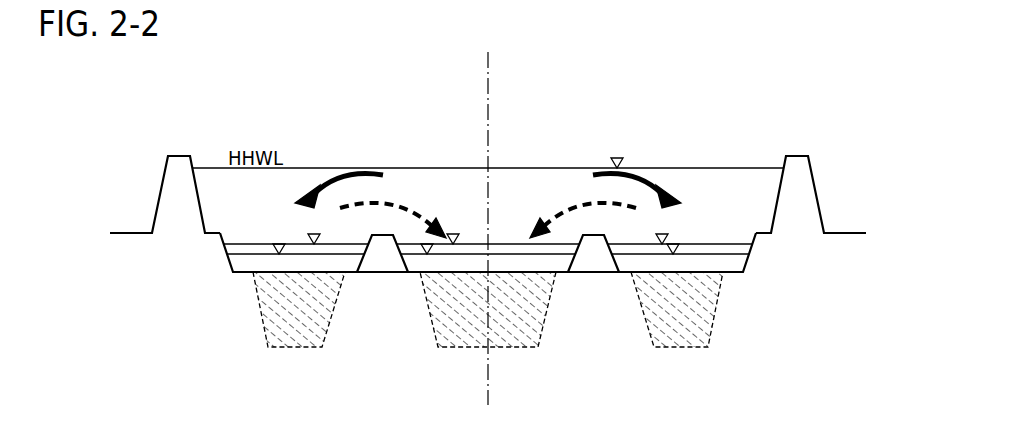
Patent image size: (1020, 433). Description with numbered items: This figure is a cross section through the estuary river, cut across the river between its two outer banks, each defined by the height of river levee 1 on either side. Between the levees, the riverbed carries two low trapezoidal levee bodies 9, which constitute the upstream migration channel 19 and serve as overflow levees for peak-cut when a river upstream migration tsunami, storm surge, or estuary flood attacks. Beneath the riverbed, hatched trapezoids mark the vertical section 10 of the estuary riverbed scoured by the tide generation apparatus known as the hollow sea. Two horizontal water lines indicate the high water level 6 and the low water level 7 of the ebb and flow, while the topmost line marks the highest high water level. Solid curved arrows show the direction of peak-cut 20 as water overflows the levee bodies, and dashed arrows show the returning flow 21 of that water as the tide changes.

The height of river levee 1 is at (177, 178).
The high water level of ebb and flow 6 is at (693, 243).
The low water level of ebb and flow 7 is at (720, 257).
The levee body constituting upstream migration channel 9 is at (382, 252).
The vertical section of estuary riverbed scoured by tide generation apparatus 10 is at (298, 332).
The upstream migration channel 19 is at (258, 263).
The direction of peak-cut 20 is at (357, 177).
The returning flow 21 is at (392, 200).